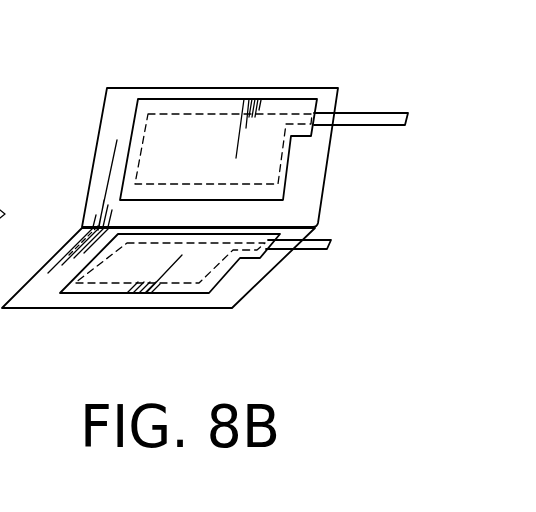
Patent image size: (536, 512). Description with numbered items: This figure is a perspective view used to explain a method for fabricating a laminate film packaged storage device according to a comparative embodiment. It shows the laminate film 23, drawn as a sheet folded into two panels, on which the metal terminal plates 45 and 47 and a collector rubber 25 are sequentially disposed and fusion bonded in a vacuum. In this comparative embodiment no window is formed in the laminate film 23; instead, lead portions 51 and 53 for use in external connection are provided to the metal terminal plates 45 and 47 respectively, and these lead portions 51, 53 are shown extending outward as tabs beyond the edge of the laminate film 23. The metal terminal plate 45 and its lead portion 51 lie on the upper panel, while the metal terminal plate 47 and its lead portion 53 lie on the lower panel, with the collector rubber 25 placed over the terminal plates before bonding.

The laminate film 23 is at (125, 97).
The collector rubber 25 is at (197, 98).
The metal terminal plate 45 is at (264, 107).
The metal terminal plate 47 is at (77, 293).
The lead portion 51 is at (373, 120).
The lead portion 53 is at (310, 251).